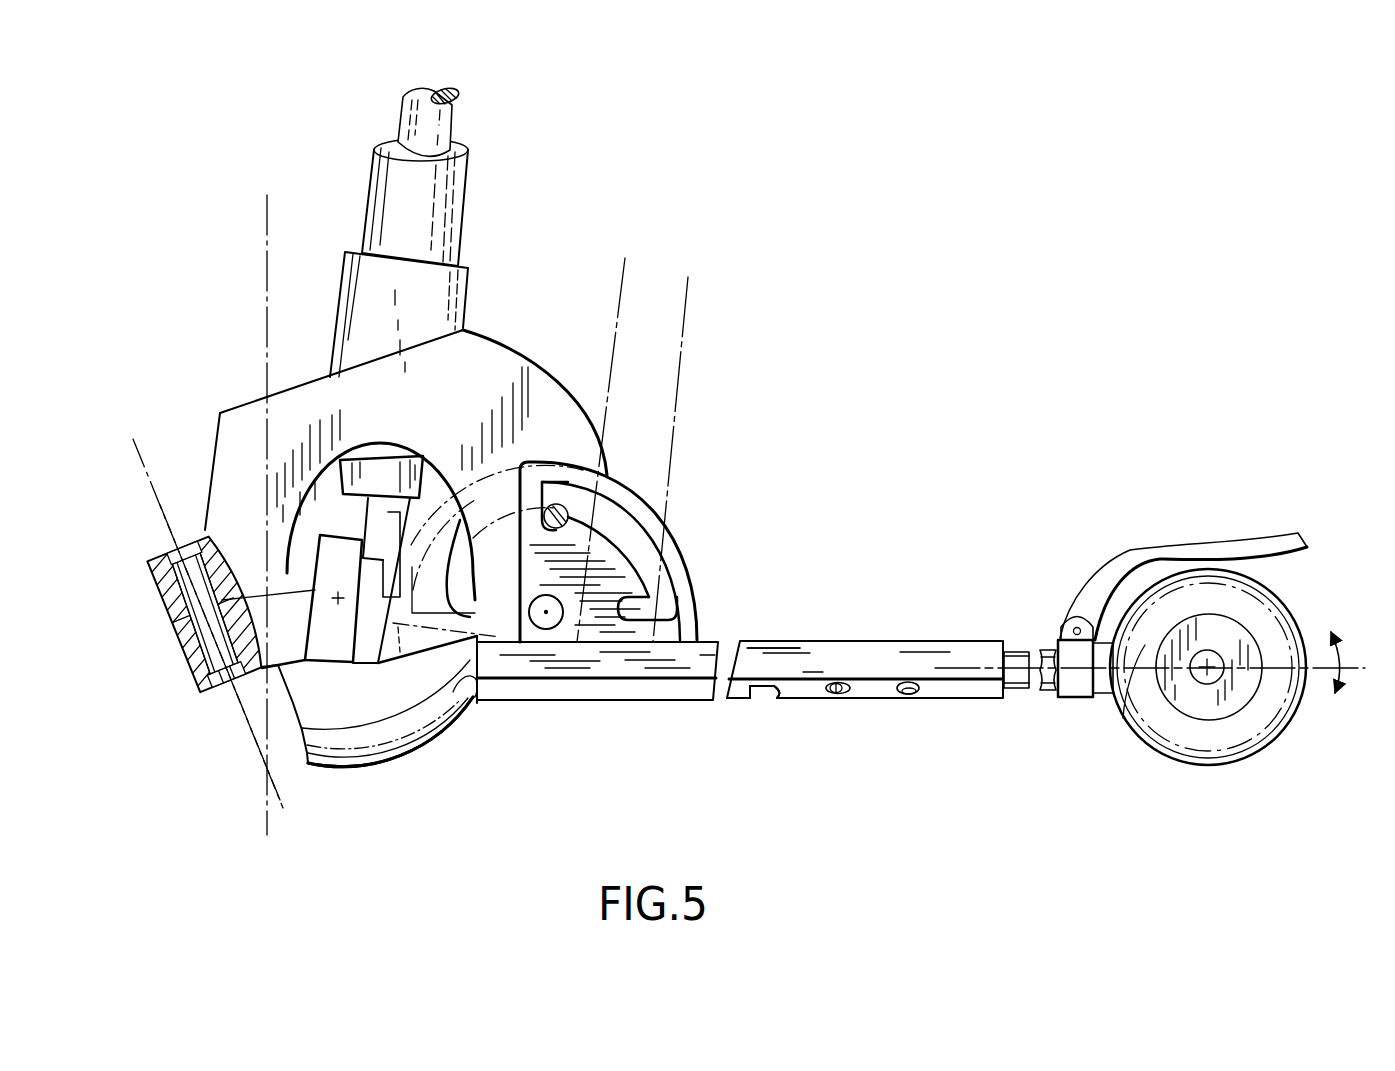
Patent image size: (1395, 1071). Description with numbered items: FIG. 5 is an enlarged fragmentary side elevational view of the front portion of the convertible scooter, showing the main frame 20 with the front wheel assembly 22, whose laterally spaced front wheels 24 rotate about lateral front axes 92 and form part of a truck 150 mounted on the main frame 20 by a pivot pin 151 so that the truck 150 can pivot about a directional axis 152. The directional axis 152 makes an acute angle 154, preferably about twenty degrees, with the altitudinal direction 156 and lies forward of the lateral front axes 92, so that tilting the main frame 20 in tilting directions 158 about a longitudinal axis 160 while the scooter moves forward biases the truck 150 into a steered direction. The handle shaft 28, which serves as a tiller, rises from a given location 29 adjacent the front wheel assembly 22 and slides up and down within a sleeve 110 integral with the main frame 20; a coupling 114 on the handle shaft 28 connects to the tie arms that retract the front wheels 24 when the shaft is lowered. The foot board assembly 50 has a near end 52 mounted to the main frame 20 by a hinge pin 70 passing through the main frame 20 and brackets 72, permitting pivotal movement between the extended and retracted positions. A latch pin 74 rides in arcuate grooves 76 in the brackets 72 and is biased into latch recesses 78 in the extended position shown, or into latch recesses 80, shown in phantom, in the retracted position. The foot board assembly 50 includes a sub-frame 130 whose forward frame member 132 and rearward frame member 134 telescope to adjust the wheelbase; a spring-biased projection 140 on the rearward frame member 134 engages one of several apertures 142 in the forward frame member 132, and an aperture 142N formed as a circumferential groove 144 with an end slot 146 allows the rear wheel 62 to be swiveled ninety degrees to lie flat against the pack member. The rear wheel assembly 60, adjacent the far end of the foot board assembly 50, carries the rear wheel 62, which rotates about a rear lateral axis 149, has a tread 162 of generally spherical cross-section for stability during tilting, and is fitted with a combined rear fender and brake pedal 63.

The main frame 20 is at (498, 355).
The front wheel assembly 22 is at (335, 525).
The front wheels 24 is at (343, 748).
The handle shaft 28 is at (443, 128).
The given location 29 is at (363, 360).
The foot board assembly 50 is at (688, 326).
The near end 52 is at (470, 707).
The rear wheel assembly 60 is at (1232, 775).
The rear wheel 62 is at (1183, 745).
The combined rear fender and brake pedal 63 is at (1200, 550).
The hinge pin 70 is at (545, 630).
The brackets 72 is at (398, 627).
The latch pin 74 is at (586, 512).
The arcuate grooves 76 is at (487, 500).
The latch recesses 78 is at (557, 503).
The latch recesses 80 is at (560, 478).
The lateral front axes 92 is at (336, 600).
The sleeve 110 is at (443, 198).
The coupling 114 is at (380, 463).
The sub-frame 130 is at (991, 630).
The forward frame member 132 is at (880, 663).
The rearward frame member 134 is at (1050, 693).
The spring-biased projection 140 is at (906, 694).
The apertures 142 is at (900, 692).
The aperture 142N is at (765, 692).
The circumferential groove 144 is at (747, 692).
The end slot 146 is at (767, 687).
The rear lateral axis 149 is at (1218, 663).
The truck 150 is at (198, 660).
The pivot pin 151 is at (200, 590).
The directional axis 152 is at (143, 458).
The acute angle 154 is at (263, 735).
The altitudinal direction 156 is at (267, 225).
The tilting directions 158 is at (1340, 650).
The longitudinal axis 160 is at (1123, 718).
The tread 162 is at (1268, 740).